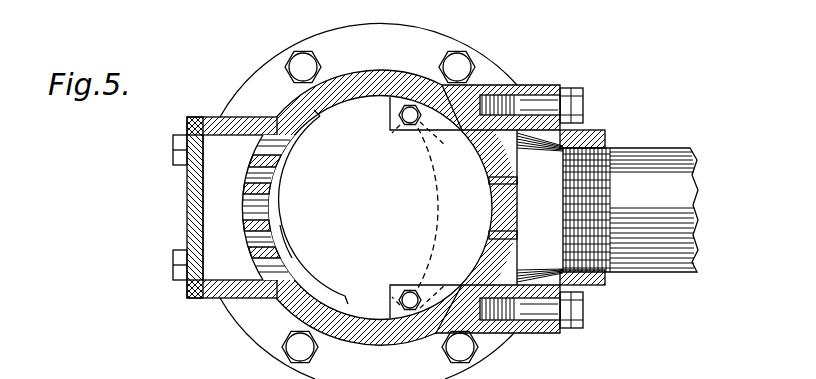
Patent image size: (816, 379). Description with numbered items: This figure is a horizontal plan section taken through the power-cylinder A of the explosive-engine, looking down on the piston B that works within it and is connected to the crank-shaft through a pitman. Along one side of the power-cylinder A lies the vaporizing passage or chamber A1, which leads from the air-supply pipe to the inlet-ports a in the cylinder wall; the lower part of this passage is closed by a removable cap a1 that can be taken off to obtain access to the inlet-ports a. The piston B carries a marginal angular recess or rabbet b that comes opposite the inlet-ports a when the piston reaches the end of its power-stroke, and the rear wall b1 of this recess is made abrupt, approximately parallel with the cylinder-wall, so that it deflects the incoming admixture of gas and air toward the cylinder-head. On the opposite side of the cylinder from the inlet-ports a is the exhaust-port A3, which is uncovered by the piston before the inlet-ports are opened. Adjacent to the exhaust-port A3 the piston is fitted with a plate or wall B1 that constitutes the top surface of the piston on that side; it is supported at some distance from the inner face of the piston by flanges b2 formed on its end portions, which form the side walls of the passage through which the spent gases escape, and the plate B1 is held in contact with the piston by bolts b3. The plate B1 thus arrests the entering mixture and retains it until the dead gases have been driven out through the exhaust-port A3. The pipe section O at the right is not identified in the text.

The power-cylinder A is at (376, 70).
The vaporizing passage or chamber A1 is at (223, 268).
The exhaust-port A3 is at (498, 207).
The inlet-ports a is at (258, 236).
The removable cap a1 is at (187, 209).
The piston B is at (408, 207).
The plate or wall B1 is at (437, 208).
The marginal angular recess or rabbet b is at (277, 178).
The rear wall of recess b1 is at (292, 250).
The flanges b2 is at (392, 297).
The bolts b3 is at (416, 290).
The outlet pipe O is at (630, 210).